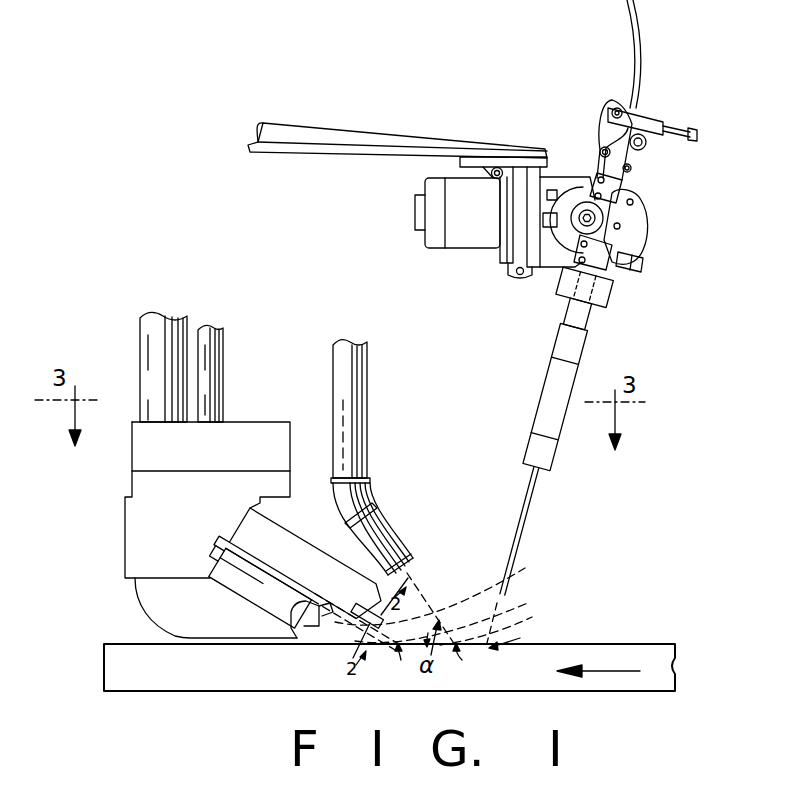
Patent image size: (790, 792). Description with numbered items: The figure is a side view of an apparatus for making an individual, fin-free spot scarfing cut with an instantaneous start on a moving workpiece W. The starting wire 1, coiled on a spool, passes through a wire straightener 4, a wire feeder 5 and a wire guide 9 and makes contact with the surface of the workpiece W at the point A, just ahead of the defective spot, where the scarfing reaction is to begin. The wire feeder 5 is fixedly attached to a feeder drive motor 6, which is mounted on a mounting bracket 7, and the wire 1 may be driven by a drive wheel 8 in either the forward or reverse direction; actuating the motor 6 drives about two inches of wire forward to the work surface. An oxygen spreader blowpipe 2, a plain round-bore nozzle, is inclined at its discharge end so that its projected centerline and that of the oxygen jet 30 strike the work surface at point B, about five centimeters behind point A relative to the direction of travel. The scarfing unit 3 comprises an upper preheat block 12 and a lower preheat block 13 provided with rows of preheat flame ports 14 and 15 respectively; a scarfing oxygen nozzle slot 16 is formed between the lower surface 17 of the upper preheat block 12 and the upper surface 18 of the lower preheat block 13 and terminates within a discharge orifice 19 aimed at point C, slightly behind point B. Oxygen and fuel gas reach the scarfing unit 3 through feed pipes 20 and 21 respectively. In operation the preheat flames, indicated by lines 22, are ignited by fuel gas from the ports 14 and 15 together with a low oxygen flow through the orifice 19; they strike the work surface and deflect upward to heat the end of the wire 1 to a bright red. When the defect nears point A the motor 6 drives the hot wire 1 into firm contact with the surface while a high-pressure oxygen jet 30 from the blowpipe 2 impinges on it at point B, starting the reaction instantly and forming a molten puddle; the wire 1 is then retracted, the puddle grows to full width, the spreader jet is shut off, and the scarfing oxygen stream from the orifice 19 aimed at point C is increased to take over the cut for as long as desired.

The starting wire 1 is at (517, 553).
The oxygen spreader blowpipe 2 is at (369, 380).
The scarfing unit 3 is at (124, 538).
The wire straightener 4 is at (650, 113).
The wire feeder 5 is at (641, 224).
The feeder drive motor 6 is at (478, 250).
The mounting bracket 7 is at (372, 138).
The drive wheel 8 is at (570, 240).
The wire guide 9 is at (550, 424).
The upper preheat block 12 is at (303, 561).
The lower preheat block 13 is at (263, 594).
The preheat flame ports 14 is at (353, 608).
The preheat flame ports 15 is at (294, 618).
The scarfing oxygen nozzle slot 16 is at (258, 561).
The lower surface of upper preheat block 17 is at (287, 533).
The upper surface of lower preheat block 18 is at (215, 585).
The discharge orifice 19 is at (316, 608).
The oxygen feed pipe 20 is at (141, 380).
The fuel gas feed pipe 21 is at (223, 380).
The preheat flames 22 is at (467, 608).
The oxygen jet 30 is at (410, 584).
The workpiece W is at (626, 658).
The point A is at (511, 634).
The point B is at (461, 662).
The point C is at (393, 662).